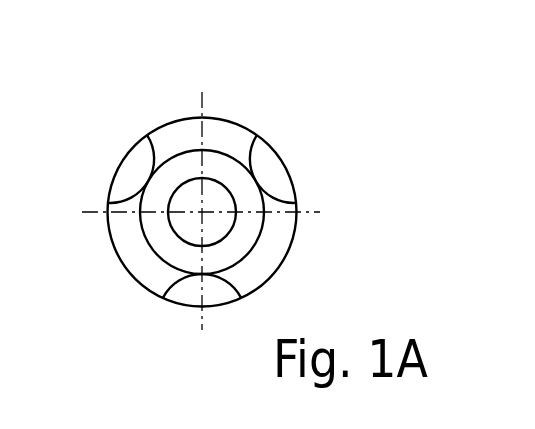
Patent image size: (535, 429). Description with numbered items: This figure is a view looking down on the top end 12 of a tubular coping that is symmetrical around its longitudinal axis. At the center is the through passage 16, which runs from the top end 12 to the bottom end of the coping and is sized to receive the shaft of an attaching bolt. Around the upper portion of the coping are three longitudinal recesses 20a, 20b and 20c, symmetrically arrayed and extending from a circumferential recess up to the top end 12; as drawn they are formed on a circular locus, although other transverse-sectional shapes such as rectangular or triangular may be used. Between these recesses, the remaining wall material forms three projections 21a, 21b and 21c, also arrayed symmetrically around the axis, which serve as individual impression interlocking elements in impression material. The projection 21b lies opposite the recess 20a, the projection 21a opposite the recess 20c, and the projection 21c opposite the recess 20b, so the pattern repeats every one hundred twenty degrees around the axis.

The top end 12 is at (228, 138).
The through passage 16 is at (185, 200).
The longitudinal recess 20a is at (190, 297).
The longitudinal recess 20b is at (128, 178).
The longitudinal recess 20c is at (277, 167).
The projection 21a is at (107, 238).
The projection 21b is at (220, 167).
The projection 21c is at (280, 267).